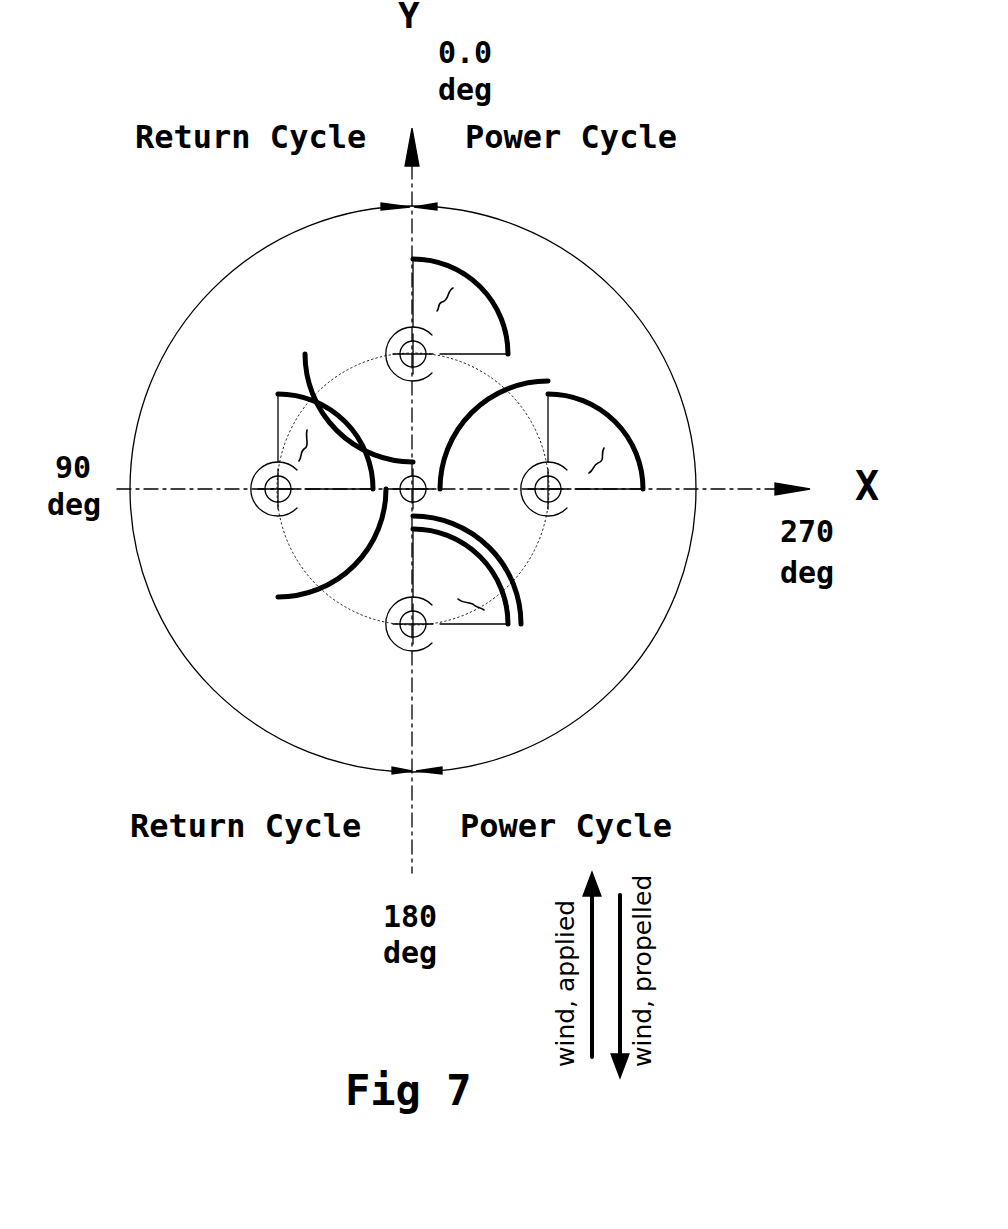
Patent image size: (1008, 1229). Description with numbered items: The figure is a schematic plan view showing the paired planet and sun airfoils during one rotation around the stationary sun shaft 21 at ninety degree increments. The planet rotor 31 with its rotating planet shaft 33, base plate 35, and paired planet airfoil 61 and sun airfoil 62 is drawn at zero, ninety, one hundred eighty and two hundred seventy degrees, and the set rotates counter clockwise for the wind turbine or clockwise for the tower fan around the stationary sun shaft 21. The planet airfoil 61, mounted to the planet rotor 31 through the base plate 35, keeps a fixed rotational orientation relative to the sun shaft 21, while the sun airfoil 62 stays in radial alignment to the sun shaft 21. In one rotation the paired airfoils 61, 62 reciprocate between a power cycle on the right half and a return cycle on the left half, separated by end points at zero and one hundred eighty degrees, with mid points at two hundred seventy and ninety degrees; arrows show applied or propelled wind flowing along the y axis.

The stationary sun shaft 21 is at (421, 471).
The planet rotor 31 is at (400, 347).
The rotating planet shaft 33 is at (387, 530).
The base plate 35 is at (440, 297).
The planet airfoil 61 is at (411, 260).
The sun airfoil 62 is at (304, 350).